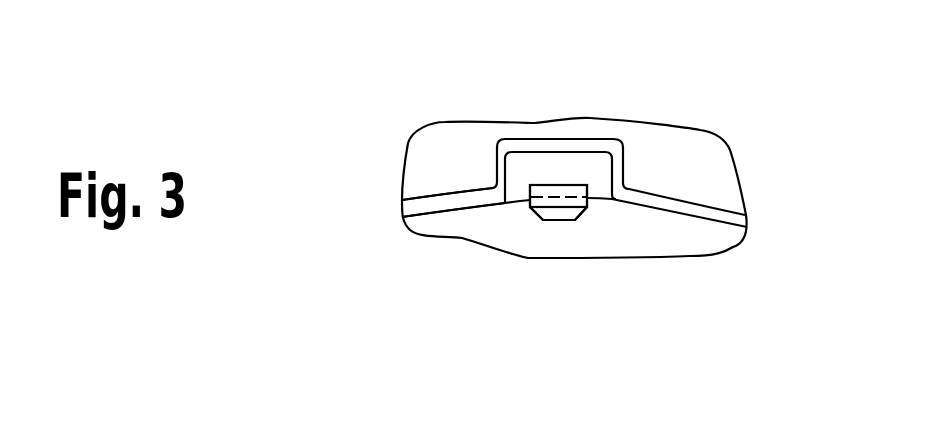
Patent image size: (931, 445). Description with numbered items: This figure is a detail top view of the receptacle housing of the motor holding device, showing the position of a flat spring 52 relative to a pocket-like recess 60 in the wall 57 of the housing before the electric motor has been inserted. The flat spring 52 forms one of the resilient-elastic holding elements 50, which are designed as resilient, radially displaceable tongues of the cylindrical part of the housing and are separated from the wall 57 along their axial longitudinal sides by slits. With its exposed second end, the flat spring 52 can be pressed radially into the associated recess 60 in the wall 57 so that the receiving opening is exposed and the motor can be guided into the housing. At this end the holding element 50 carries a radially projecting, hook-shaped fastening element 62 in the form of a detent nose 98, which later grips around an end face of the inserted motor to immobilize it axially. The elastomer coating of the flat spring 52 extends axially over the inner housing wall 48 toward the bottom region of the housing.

The inner housing wall 48 is at (683, 235).
The resilient-elastic holding element 50 is at (526, 216).
The flat spring 52 is at (520, 226).
The wall 57 is at (657, 202).
The pocket-like recess 60 is at (545, 165).
The hook-shaped fastening element 62 is at (570, 212).
The detent nose 98 is at (588, 323).